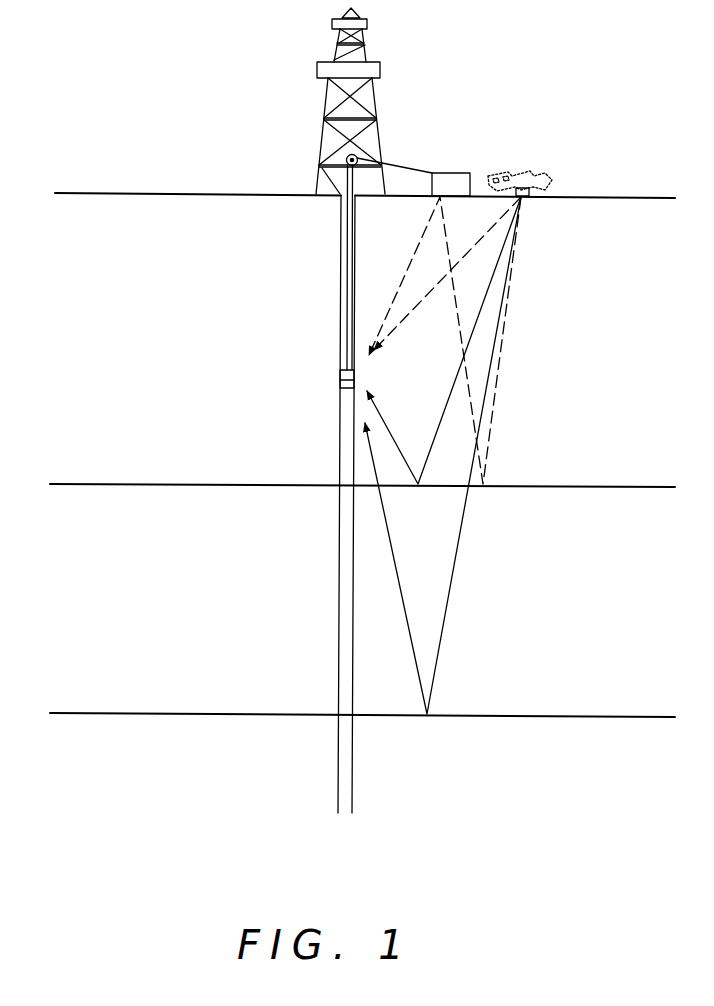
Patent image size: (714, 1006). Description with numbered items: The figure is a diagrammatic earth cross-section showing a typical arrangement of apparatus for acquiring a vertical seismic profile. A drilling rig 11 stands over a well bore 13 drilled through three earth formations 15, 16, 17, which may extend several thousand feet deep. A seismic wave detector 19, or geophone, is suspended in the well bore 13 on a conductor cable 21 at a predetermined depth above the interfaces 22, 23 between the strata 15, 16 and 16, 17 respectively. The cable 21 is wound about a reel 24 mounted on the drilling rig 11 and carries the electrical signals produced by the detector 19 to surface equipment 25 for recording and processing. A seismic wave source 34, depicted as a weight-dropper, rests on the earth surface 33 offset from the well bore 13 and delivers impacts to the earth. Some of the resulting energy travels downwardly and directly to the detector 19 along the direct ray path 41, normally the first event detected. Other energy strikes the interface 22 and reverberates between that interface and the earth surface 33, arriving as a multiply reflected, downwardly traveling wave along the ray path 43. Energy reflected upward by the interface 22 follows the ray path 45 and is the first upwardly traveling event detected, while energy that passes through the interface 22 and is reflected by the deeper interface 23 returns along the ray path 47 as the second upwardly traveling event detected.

The drilling rig 11 is at (326, 108).
The well bore 13 is at (338, 563).
The earth formation 15 is at (162, 340).
The earth formation 16 is at (160, 602).
The earth formation 17 is at (160, 830).
The seismic wave detector 19 is at (340, 381).
The conductor cable 21 is at (345, 258).
The interface 22 is at (567, 487).
The interface 23 is at (555, 717).
The reel 24 is at (358, 156).
The surface equipment 25 is at (455, 173).
The earth surface 33 is at (215, 193).
The seismic wave source 34 is at (546, 176).
The direct ray path 41 is at (417, 339).
The multiple ray path 43 is at (497, 390).
The first reflection ray path 45 is at (440, 424).
The second reflection ray path 47 is at (405, 613).